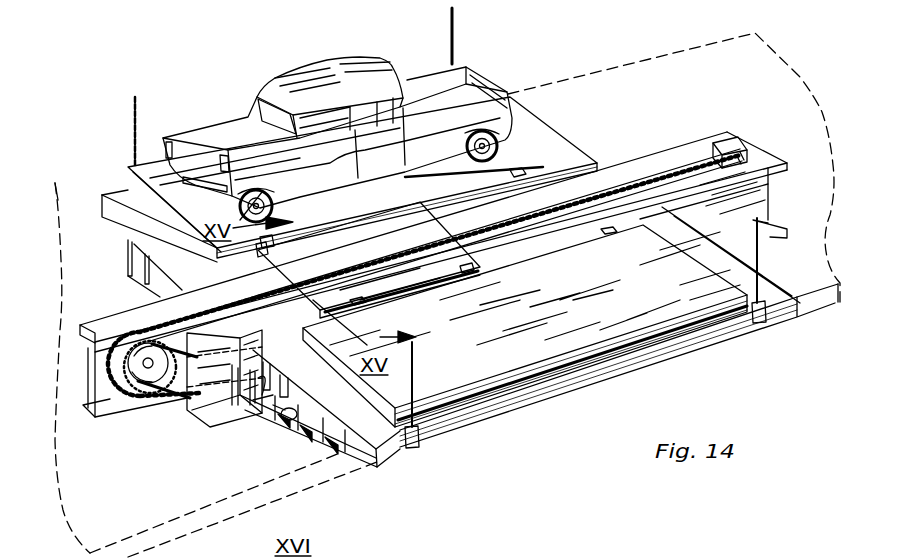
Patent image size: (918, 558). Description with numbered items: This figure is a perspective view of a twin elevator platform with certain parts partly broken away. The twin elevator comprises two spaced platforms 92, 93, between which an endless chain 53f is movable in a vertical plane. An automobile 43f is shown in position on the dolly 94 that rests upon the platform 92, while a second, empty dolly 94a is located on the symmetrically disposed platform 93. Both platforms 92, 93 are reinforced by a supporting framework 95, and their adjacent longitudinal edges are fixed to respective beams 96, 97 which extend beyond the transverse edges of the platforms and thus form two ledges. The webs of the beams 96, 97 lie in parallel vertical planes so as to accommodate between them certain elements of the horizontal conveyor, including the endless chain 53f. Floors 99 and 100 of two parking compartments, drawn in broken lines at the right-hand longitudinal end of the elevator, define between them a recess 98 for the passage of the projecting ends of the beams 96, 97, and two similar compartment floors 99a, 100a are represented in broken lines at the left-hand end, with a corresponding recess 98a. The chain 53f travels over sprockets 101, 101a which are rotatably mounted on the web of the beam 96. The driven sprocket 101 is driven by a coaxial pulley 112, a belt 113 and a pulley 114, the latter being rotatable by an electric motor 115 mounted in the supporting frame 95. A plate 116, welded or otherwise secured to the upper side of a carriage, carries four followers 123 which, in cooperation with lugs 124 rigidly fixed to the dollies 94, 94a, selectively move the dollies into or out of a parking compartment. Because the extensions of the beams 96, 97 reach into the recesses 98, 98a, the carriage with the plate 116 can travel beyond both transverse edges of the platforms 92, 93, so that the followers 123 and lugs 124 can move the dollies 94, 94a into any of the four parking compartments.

The automobile 43f is at (275, 92).
The endless chain 53f is at (622, 185).
The platform 92 is at (140, 216).
The platform 93 is at (388, 433).
The dolly 94 is at (128, 179).
The dolly 94a is at (523, 357).
The supporting framework 95 is at (132, 268).
The beam 96 is at (115, 327).
The beam 97 is at (200, 334).
The recess 98 is at (760, 145).
The recess 98a is at (75, 378).
The floor 99 is at (805, 278).
The compartment floor 99a is at (150, 515).
The floor 100 is at (570, 92).
The compartment floor 100a is at (55, 183).
The driven sprocket 101 is at (130, 387).
The sprocket 101a is at (715, 158).
The pulley 112 is at (148, 377).
The belt 113 is at (180, 397).
The pulley 114 is at (250, 398).
The electric motor 115 is at (268, 430).
The plate 116 is at (413, 268).
The follower 123 is at (257, 258).
The lug 124 is at (520, 176).